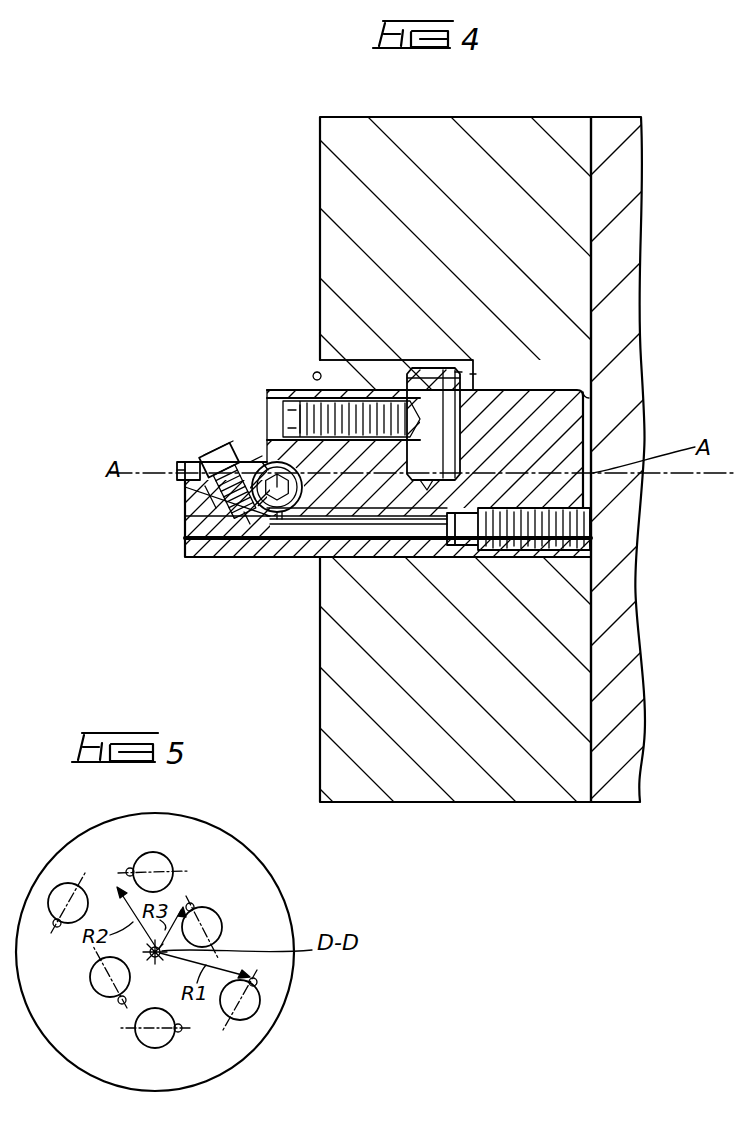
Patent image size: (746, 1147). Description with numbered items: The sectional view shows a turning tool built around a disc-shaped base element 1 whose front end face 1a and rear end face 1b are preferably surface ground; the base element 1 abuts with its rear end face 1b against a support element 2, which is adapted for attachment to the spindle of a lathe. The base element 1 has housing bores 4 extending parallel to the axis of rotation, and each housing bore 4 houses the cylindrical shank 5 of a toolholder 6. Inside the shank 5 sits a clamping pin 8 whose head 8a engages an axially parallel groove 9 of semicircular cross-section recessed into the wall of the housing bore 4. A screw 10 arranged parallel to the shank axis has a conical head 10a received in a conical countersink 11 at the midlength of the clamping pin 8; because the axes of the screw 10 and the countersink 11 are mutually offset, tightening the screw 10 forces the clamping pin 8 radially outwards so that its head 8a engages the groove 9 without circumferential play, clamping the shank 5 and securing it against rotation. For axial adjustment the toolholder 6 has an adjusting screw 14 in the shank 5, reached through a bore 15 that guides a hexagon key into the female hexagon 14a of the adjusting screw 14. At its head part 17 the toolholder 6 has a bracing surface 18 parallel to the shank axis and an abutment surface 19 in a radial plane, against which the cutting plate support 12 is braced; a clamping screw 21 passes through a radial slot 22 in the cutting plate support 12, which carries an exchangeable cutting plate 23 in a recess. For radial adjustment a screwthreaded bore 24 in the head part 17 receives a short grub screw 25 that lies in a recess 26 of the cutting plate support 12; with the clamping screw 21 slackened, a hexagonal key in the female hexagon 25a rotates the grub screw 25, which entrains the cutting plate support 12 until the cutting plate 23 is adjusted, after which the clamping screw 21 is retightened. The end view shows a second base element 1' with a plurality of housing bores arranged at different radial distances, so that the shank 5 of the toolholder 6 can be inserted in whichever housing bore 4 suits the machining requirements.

In FIG. 4, the base element 1 is at (373, 449).
In FIG. 4, the front end face 1a is at (330, 180).
In FIG. 4, the rear end face 1b is at (602, 140).
In FIG. 4, the support element 2 is at (618, 140).
In FIG. 4, the housing bore 4 is at (587, 402).
In FIG. 5, the housing bore 4 is at (258, 1007).
In FIG. 4, the cylindrical shank 5 is at (567, 440).
In FIG. 4, the toolholder 6 is at (222, 560).
In FIG. 4, the clamping pin 8 is at (452, 376).
In FIG. 4, the head of clamping pin 8a is at (473, 377).
In FIG. 4, the axially parallel groove 9 is at (318, 374).
In FIG. 5, the axially parallel groove 9 is at (257, 982).
In FIG. 4, the screw 10 is at (317, 412).
In FIG. 4, the conical head 10a is at (368, 375).
In FIG. 4, the conical countersink 11 is at (450, 458).
In FIG. 4, the cutting plate support 12 is at (188, 457).
In FIG. 4, the adjusting screw 14 is at (573, 528).
In FIG. 4, the female hexagon 14a is at (493, 552).
In FIG. 4, the bore 15 is at (323, 530).
In FIG. 4, the head part 17 is at (200, 550).
In FIG. 4, the bracing surface 18 is at (185, 510).
In FIG. 4, the abutment surface 19 is at (267, 453).
In FIG. 4, the clamping screw 21 is at (207, 447).
In FIG. 4, the slot 22 is at (210, 490).
In FIG. 4, the cutting plate 23 is at (180, 470).
In FIG. 4, the screwthreaded bore 24 is at (280, 497).
In FIG. 4, the grub screw 25 is at (255, 462).
In FIG. 4, the female hexagon 25a is at (262, 455).
In FIG. 4, the recess 26 is at (247, 515).
In FIG. 5, the base element 1' is at (176, 952).